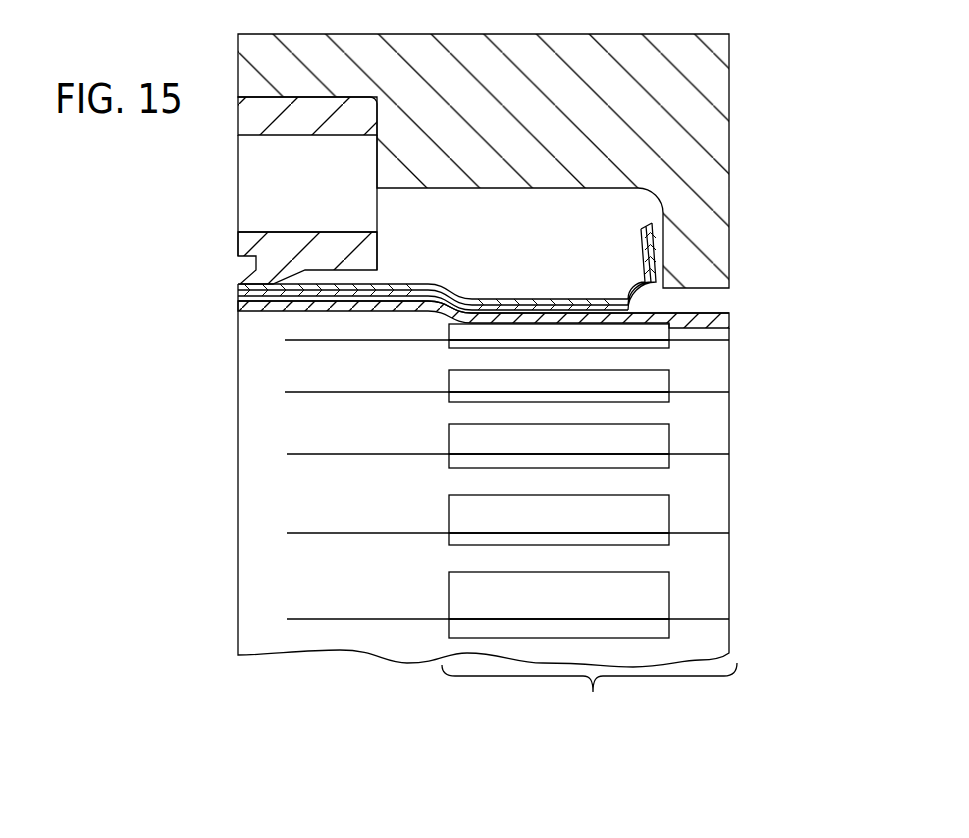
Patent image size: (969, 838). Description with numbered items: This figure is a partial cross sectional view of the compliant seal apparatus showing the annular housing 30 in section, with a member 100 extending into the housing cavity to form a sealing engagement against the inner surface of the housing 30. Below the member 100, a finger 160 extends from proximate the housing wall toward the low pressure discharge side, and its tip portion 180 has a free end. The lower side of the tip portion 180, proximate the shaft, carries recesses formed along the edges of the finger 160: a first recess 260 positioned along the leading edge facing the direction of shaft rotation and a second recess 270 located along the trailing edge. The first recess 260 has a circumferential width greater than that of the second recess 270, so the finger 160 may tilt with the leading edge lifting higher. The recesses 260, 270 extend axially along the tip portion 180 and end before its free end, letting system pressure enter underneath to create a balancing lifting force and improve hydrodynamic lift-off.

The annular housing 30 is at (734, 72).
The member 100 is at (622, 243).
The finger 160 is at (713, 313).
The first recess 260 is at (668, 517).
The second recess 270 is at (667, 463).
The tip portion 180 is at (589, 693).